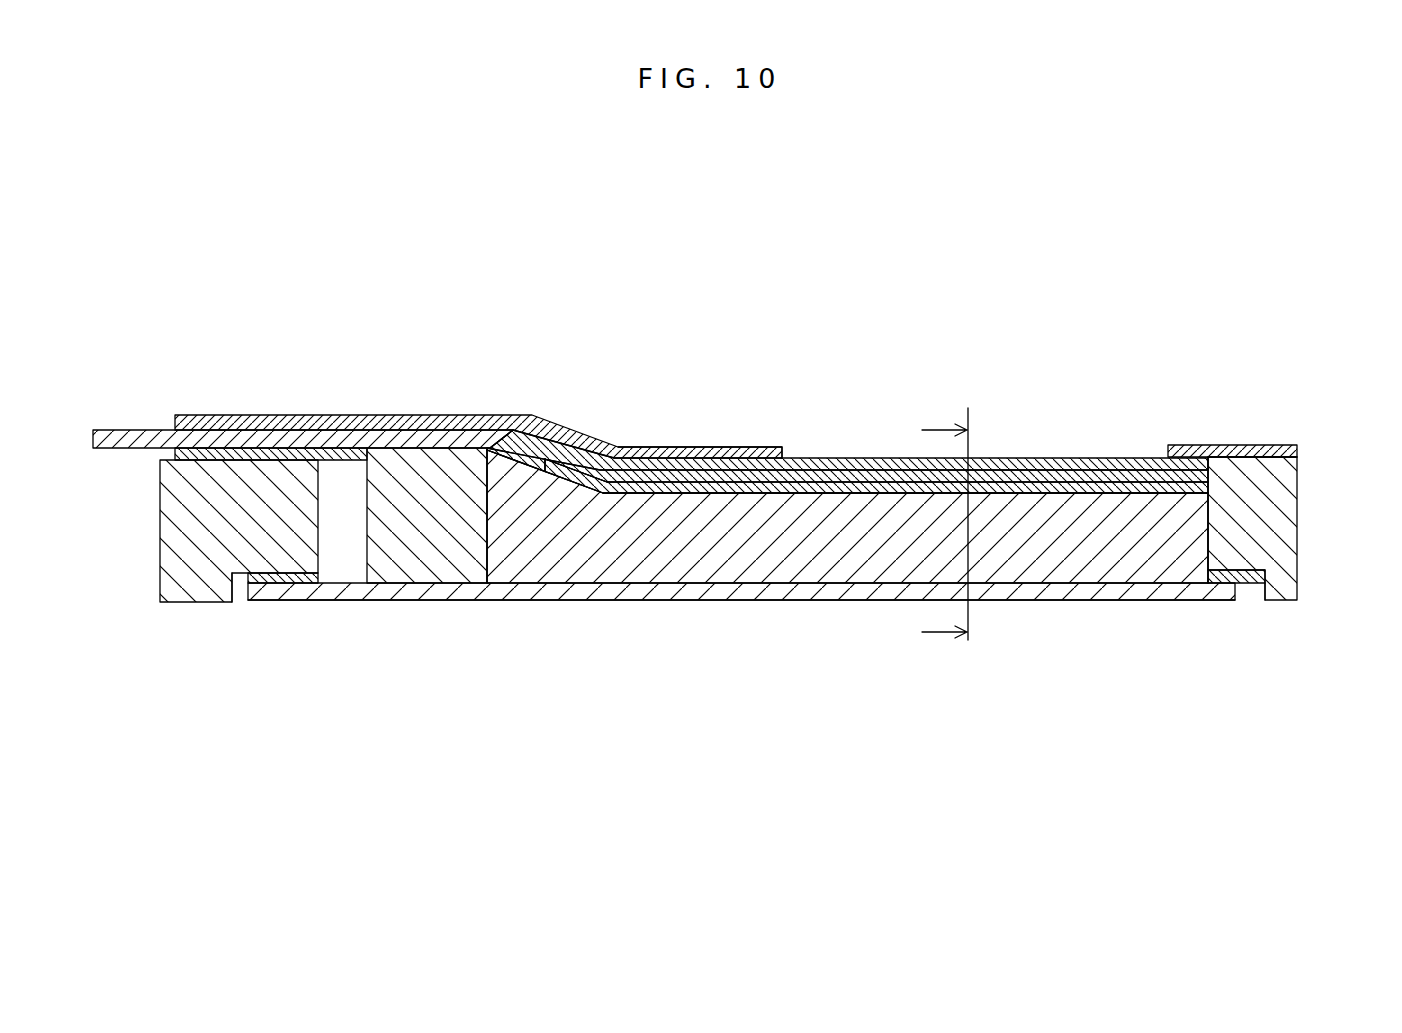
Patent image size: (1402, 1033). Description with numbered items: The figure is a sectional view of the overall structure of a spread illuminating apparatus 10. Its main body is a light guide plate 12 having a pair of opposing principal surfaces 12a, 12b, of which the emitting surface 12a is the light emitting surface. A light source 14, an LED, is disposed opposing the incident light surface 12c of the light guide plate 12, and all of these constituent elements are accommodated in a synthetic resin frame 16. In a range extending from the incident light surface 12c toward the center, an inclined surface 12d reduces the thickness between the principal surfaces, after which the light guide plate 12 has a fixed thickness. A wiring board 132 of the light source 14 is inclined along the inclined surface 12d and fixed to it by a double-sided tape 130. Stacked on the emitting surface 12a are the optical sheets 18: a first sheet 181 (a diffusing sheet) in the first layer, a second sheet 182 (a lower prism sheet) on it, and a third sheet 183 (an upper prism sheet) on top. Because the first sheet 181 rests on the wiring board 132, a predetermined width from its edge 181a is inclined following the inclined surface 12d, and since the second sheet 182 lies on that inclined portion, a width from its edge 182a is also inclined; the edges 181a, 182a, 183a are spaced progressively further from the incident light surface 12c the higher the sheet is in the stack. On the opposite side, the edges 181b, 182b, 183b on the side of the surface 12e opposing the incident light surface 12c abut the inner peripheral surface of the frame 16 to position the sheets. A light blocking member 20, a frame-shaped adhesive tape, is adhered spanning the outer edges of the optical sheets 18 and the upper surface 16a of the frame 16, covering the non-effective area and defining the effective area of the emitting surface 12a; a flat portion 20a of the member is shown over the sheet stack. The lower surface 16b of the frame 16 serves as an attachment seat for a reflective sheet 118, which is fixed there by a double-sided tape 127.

The spread illuminating apparatus 10 is at (1018, 257).
The light guide plate 12 is at (672, 548).
The emitting surface 12a is at (1089, 479).
The principal surface 12b is at (845, 587).
The incident light surface 12c is at (478, 541).
The inclined surface 12d is at (500, 446).
The surface opposing the incident light surface 12e is at (1226, 534).
The light source 14 is at (415, 557).
The frame 16 is at (190, 603).
The upper surface of the frame 16a is at (1284, 447).
The lower surface of the frame 16b is at (247, 592).
The optical sheets 18 is at (772, 305).
The first sheet 181 is at (822, 462).
The edge of the first sheet 181a is at (510, 457).
The edge of the first sheet 181b is at (1213, 472).
The second sheet 182 is at (840, 473).
The edge of the second sheet 182a is at (640, 455).
The edge of the second sheet 182b is at (1291, 448).
The third sheet 183 is at (866, 490).
The edge of the third sheet 183a is at (705, 467).
The edge of the third sheet 183b is at (1213, 457).
The light blocking member 20 is at (343, 414).
The flat portion of cover plate 20a is at (789, 446).
The reflective sheet 118 is at (768, 601).
The double-sided tape 127 is at (283, 584).
The double-sided tape 130 is at (210, 462).
The wiring board 132 is at (133, 429).